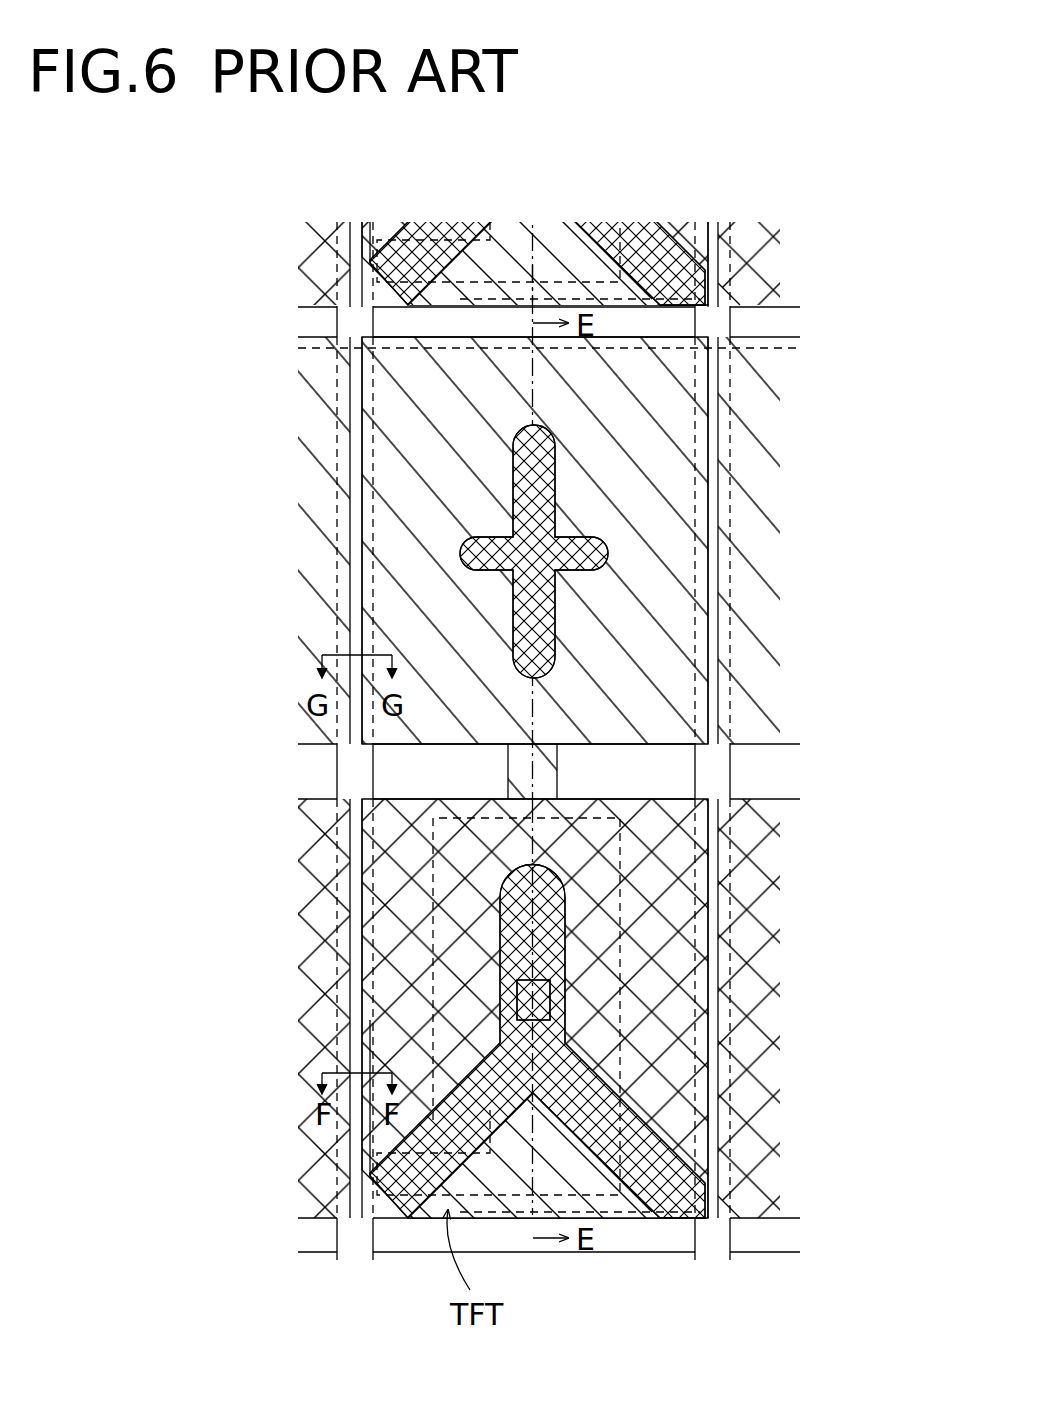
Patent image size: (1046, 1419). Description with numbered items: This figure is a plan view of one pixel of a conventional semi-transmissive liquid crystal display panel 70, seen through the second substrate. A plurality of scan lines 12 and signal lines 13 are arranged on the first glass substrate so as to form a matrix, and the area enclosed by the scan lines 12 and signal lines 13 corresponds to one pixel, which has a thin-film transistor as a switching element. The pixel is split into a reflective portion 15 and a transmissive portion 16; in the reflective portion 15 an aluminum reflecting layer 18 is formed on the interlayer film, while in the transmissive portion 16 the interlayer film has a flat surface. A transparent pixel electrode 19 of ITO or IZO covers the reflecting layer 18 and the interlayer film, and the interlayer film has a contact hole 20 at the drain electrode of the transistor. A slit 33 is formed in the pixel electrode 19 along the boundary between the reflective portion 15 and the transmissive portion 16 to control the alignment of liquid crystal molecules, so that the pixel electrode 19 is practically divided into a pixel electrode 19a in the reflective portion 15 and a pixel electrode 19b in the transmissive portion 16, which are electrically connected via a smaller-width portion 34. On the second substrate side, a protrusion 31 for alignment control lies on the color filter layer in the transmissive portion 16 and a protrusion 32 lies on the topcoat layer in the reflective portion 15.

The semi-transmissive liquid crystal display panel 70 is at (254, 184).
The scan line 12 is at (437, 318).
The signal line 13 is at (352, 1028).
The reflective portion 15 is at (676, 856).
The transmissive portion 16 is at (503, 362).
The reflecting layer 18 is at (400, 850).
The pixel electrode 19 is at (665, 392).
The pixel electrode formed in the reflective portion 19a is at (705, 993).
The pixel electrode formed in the transmissive portion 19b is at (665, 505).
The contact hole 20 is at (513, 1000).
The protrusion 31 is at (462, 556).
The protrusion 32 is at (592, 1100).
The slit 33 is at (668, 776).
The smaller-width portion 34 is at (555, 745).